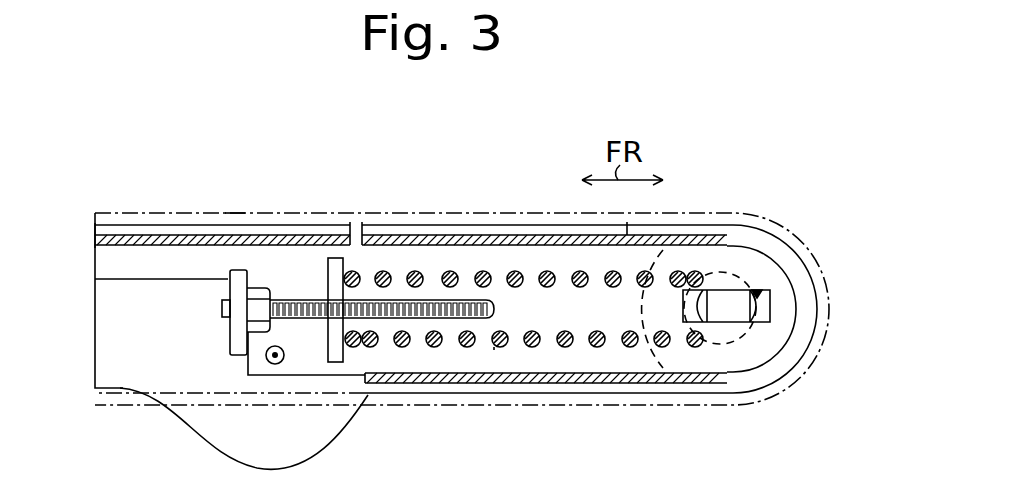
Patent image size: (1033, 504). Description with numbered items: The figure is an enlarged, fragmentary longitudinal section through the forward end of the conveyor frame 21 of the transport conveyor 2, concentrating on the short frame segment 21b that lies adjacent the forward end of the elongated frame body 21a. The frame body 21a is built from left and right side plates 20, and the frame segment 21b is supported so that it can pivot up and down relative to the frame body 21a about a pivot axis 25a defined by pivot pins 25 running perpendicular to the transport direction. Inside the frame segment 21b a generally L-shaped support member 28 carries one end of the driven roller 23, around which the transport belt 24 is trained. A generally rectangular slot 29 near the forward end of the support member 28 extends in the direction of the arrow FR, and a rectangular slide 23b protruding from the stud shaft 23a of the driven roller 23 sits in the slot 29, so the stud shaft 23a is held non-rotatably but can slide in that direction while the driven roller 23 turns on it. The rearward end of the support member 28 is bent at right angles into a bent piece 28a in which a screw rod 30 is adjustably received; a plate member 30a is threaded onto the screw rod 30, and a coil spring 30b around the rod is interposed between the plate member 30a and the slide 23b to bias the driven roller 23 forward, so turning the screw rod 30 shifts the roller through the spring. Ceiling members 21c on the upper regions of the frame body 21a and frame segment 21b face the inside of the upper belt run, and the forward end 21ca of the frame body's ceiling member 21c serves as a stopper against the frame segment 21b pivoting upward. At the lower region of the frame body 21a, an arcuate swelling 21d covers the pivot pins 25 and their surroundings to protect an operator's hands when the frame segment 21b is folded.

The transport conveyor 2 is at (532, 201).
The side plate 20 is at (158, 225).
The conveyor frame 21 is at (375, 148).
The frame body 21a is at (207, 290).
The frame segment 21b is at (387, 257).
The ceiling member 21c is at (132, 235).
The forward end 21ca is at (318, 256).
The arcuate swelling 21d is at (193, 428).
The driven roller 23 is at (803, 282).
The stud shaft 23a is at (765, 318).
The slide 23b is at (731, 315).
The transport belt 24 is at (232, 214).
The pivot pin 25 is at (265, 363).
The pivot axis 25a is at (275, 365).
The support member 28 is at (424, 250).
The bent piece 28a is at (237, 340).
The slot 29 is at (757, 292).
The screw rod 30 is at (298, 300).
The plate member 30a is at (348, 365).
The coil spring 30b is at (497, 347).